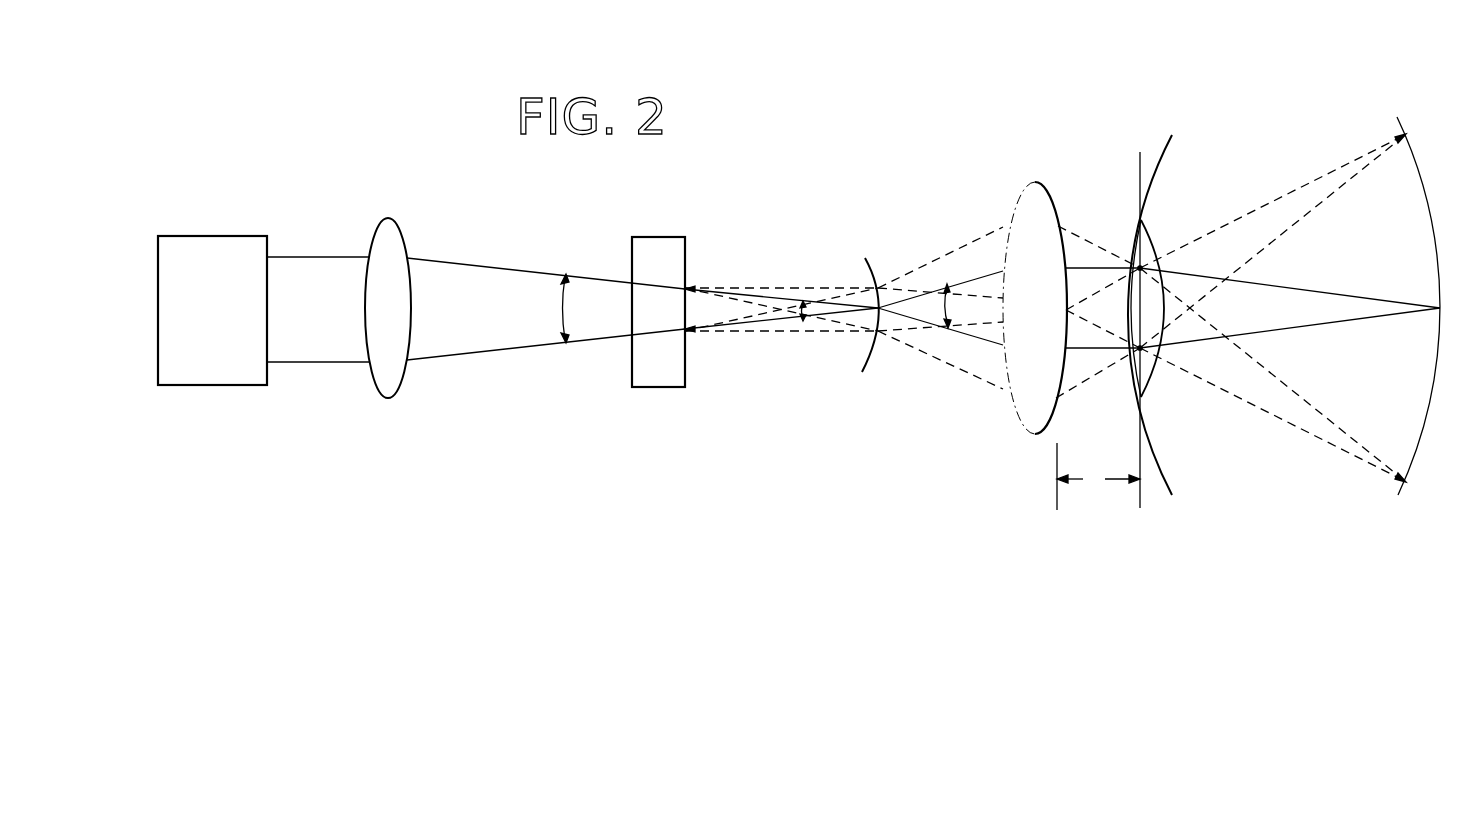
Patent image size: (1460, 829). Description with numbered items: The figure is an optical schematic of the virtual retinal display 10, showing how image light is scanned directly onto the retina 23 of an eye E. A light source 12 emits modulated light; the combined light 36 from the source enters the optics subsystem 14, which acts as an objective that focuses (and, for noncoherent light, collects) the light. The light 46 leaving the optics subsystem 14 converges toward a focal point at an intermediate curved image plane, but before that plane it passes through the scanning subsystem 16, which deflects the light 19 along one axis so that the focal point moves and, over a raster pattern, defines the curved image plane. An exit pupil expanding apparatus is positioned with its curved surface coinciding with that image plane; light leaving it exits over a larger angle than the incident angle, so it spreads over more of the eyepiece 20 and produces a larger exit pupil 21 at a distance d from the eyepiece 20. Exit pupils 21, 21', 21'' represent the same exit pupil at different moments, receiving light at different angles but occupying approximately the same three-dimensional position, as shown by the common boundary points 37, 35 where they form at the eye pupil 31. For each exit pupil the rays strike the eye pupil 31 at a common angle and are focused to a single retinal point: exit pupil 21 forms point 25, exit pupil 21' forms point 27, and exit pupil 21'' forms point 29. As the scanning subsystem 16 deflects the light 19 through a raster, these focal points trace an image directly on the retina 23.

The retinal display 10 is at (1030, 66).
The light source 12 is at (252, 236).
The optics subsystem 14 is at (397, 221).
The light 36 is at (325, 318).
The converging beam 46 is at (492, 318).
The scanning subsystem 16 is at (672, 237).
The light 19 is at (757, 297).
The eyepiece 20 is at (1037, 183).
The exit pupil 21' is at (1097, 211).
The exit pupil 21 is at (1102, 265).
The exit pupil 21'' is at (1098, 394).
The distance d is at (1098, 476).
The eye E is at (1172, 135).
The eye pupil 31 is at (1165, 300).
The upper pupil point 37 is at (1143, 266).
The common boundary point 35 is at (1150, 362).
The point 25 is at (1437, 302).
The image point 29 is at (1400, 145).
The point 27 is at (1400, 472).
The retina 23 is at (1426, 190).